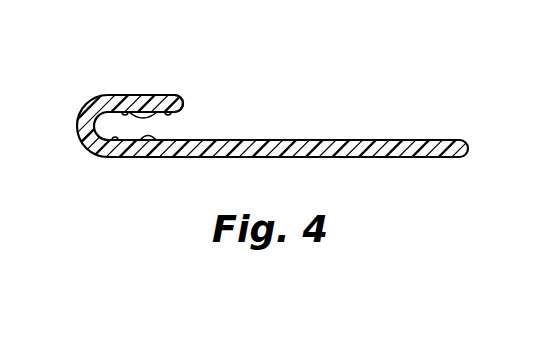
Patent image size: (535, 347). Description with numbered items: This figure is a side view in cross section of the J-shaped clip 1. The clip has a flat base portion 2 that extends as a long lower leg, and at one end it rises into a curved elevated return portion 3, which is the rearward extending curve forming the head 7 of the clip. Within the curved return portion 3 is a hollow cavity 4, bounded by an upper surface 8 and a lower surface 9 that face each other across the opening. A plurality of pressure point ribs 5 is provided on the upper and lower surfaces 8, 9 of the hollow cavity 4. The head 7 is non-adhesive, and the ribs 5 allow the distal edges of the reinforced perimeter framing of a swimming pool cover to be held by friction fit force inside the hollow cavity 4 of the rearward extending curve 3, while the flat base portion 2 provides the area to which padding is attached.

The J-shaped clip 1 is at (239, 113).
The flat base portion 2 is at (357, 140).
The curved elevated return portion 3 is at (81, 120).
The hollow cavity 4 is at (114, 123).
The pressure point ribs 5 is at (172, 114).
The head 7 is at (184, 103).
The upper surface 8 is at (160, 112).
The lower surface 9 is at (122, 139).